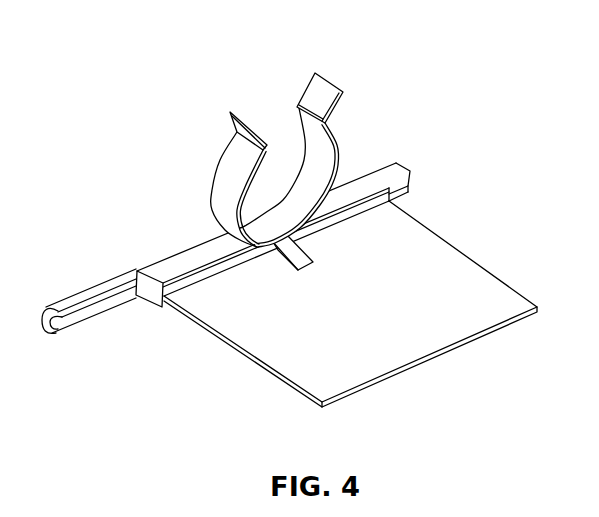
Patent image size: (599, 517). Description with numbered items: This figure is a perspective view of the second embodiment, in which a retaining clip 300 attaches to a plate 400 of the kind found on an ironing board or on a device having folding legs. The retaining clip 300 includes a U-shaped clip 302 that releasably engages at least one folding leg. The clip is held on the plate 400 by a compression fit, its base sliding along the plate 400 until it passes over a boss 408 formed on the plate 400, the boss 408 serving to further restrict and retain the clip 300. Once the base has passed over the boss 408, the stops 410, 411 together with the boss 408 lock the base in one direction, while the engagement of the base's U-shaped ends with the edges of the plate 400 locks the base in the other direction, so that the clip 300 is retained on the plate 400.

The retaining clip 300 is at (312, 136).
The U-shaped clip 302 is at (320, 89).
The plate 400 is at (450, 245).
The boss 408 is at (278, 252).
The stop 410 is at (401, 185).
The stop 411 is at (95, 310).